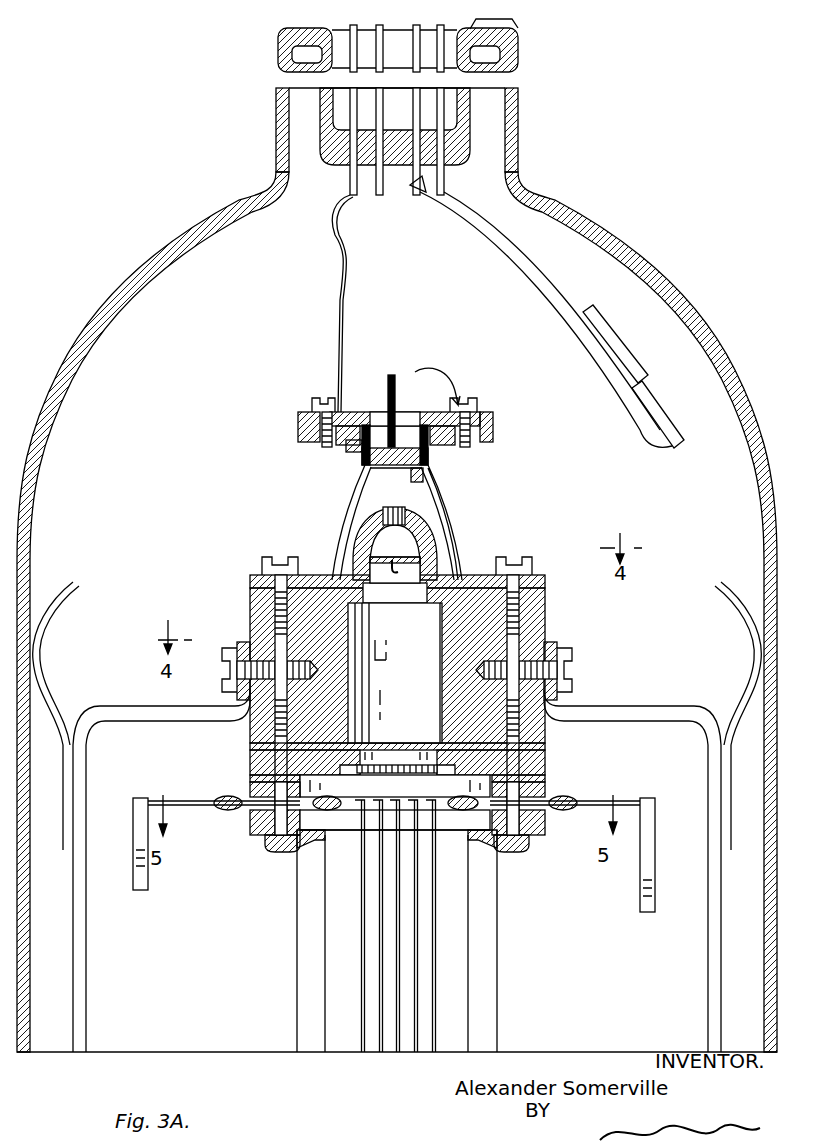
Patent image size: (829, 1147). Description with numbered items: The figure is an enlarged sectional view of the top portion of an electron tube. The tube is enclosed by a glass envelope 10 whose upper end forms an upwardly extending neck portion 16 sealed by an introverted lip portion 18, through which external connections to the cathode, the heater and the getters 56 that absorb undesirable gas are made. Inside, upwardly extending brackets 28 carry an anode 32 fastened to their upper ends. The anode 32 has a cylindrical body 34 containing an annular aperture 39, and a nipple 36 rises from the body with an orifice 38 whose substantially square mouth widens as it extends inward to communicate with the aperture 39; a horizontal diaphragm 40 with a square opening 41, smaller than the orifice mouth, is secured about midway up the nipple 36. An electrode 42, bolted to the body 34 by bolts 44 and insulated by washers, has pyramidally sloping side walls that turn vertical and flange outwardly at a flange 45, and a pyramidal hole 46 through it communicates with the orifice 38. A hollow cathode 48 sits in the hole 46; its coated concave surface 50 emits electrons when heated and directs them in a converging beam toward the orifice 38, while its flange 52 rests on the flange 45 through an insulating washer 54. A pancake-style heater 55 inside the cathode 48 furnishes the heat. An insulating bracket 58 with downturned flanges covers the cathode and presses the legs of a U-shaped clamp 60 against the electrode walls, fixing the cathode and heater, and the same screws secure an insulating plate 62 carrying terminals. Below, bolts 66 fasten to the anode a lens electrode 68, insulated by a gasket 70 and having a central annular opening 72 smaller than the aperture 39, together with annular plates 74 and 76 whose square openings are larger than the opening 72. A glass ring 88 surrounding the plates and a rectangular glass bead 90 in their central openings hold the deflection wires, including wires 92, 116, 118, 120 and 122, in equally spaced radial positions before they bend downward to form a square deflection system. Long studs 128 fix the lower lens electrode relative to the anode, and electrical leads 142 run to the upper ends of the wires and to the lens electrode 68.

The glass envelope 10 is at (650, 268).
The neck portion 16 is at (518, 125).
The introverted lip portion 18 is at (320, 60).
The brackets 28 is at (85, 1002).
The anode 32 is at (250, 592).
The cylindrical body 34 is at (250, 612).
The nipple 36 is at (357, 530).
The orifice 38 is at (410, 514).
The annular aperture 39 is at (440, 690).
The diaphragm 40 is at (412, 556).
The square opening 41 is at (395, 570).
The electrode 42 is at (338, 520).
The bolts 44 is at (268, 560).
The flange 45 is at (352, 450).
The hole 46 is at (350, 494).
The hollow cathode 48 is at (425, 474).
The surface 50 is at (446, 490).
The flange 52 is at (362, 422).
The washer 54 is at (348, 412).
The heater 55 is at (432, 458).
The getters 56 is at (632, 362).
The bracket 58 is at (298, 425).
The U-shaped clamp 60 is at (312, 445).
The insulating plate 62 is at (312, 408).
The bolts 66 is at (275, 848).
The lens electrode 68 is at (545, 760).
The gasket 70 is at (250, 746).
The annular opening 72 is at (432, 752).
The annular plate 74 is at (250, 781).
The annular plate 76 is at (252, 825).
The glass ring 88 is at (215, 808).
The rectangular glass bead 90 is at (476, 812).
The wire 92 is at (434, 1052).
The wire 116 is at (363, 1052).
The wire 118 is at (381, 1052).
The wire 120 is at (398, 1052).
The wire 122 is at (416, 1052).
The long studs 128 is at (297, 995).
The electrical leads 142 is at (148, 890).